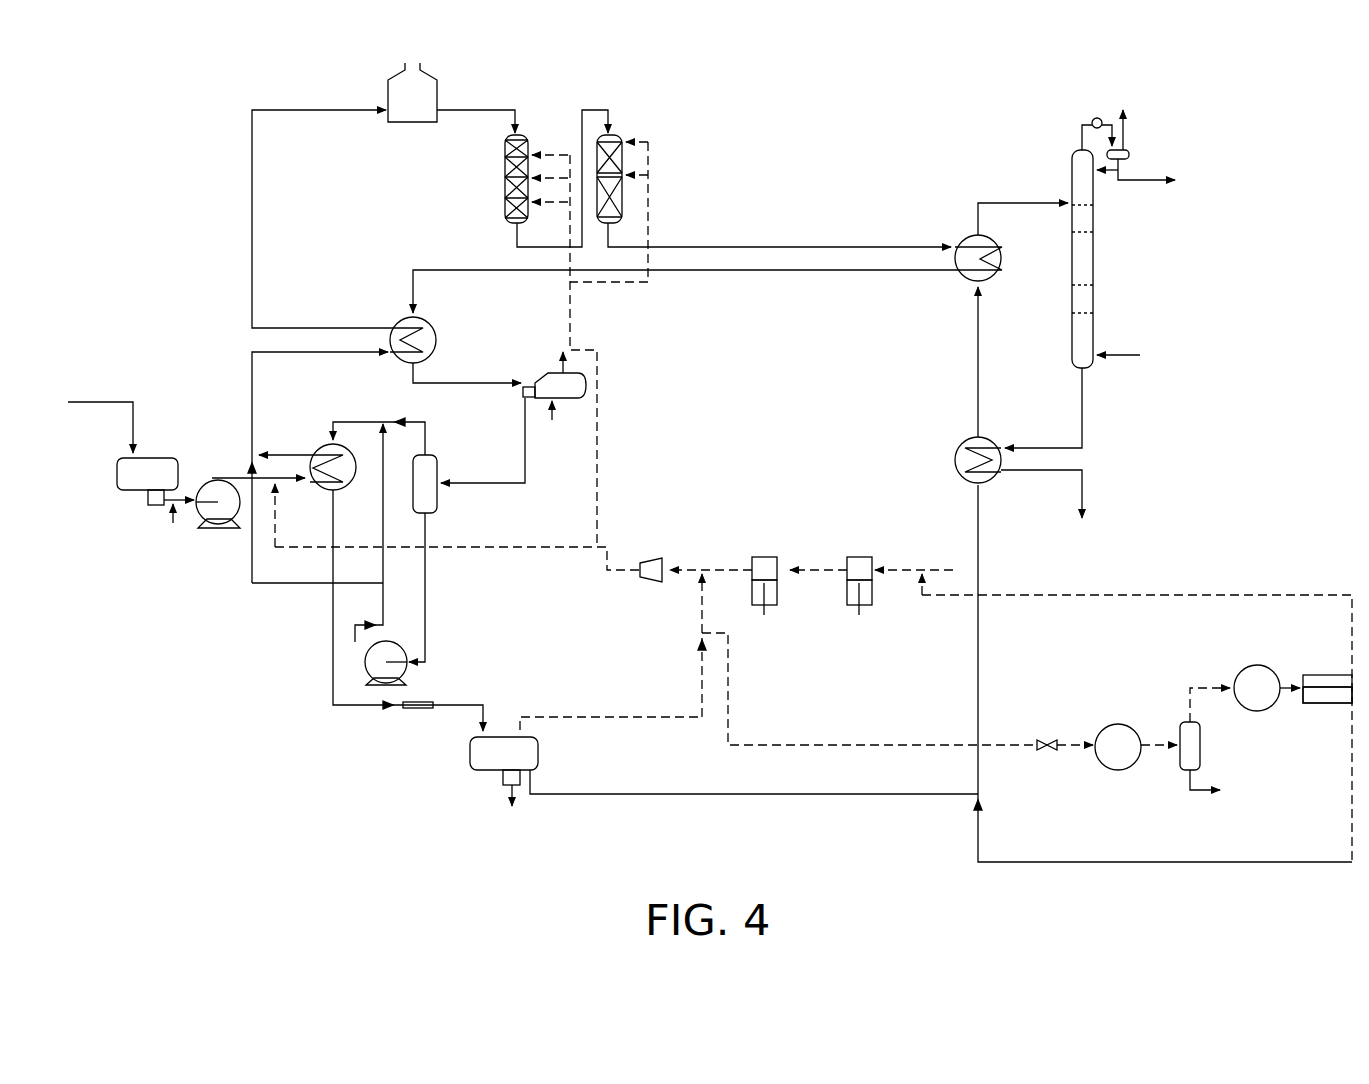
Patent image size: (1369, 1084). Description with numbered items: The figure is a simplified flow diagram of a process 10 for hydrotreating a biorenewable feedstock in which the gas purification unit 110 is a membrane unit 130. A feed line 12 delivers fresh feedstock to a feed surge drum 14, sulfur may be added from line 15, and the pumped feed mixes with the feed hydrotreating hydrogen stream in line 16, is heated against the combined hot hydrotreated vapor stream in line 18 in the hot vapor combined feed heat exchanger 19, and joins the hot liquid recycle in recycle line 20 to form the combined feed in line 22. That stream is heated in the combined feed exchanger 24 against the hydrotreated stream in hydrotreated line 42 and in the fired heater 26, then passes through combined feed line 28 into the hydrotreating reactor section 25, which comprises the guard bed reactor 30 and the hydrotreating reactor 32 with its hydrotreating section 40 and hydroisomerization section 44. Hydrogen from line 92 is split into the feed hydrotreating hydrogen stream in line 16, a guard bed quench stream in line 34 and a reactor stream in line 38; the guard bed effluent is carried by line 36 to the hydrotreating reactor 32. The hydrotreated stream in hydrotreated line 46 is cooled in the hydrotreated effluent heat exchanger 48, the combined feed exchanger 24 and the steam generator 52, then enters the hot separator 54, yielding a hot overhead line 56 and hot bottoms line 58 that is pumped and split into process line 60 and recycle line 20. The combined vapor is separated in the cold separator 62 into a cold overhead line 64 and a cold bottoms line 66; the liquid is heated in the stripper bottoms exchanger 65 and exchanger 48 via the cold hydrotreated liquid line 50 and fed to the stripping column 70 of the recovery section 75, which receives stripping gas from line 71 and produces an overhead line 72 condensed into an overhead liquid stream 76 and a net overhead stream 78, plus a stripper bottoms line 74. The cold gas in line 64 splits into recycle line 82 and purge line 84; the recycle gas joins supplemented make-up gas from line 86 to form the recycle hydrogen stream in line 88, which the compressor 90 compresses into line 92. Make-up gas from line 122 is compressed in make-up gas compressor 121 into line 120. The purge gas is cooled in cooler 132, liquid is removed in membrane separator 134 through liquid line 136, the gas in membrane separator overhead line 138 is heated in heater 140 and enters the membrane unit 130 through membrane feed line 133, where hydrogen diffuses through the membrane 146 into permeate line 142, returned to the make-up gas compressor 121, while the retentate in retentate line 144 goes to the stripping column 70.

The process 10 is at (117, 240).
The feed line 12 is at (95, 404).
The feed surge drum 14 is at (165, 457).
The line 15 is at (173, 521).
The feed hydrotreating hydrogen stream line 16 is at (470, 546).
The combined hot hydrotreated vapor stream line 18 is at (372, 420).
The hot vapor combined feed heat exchanger 19 is at (322, 488).
The recycle line 20 is at (275, 584).
The combined biorenewable feed stream line 22 is at (252, 400).
The combined feed exchanger 24 is at (428, 326).
The hydrotreating reactor section 25 is at (686, 132).
The fired heater 26 is at (388, 110).
The combined feed line 28 is at (508, 108).
The guard bed reactor 30 is at (505, 180).
The hydrotreating reactor 32 is at (612, 131).
The guard bed hydrotreating hydrogen stream line 34 is at (568, 290).
The interstage line 36 is at (540, 248).
The reactor hydrotreating hydrogen stream line 38 is at (650, 230).
The hydrotreating section 40 is at (623, 160).
The hydrotreated line 42 is at (438, 269).
The hydroisomerization section 44 is at (623, 196).
The hydrotreated line 46 is at (795, 246).
The hydrotreated effluent heat exchanger 48 is at (1003, 243).
The cold hydrotreated liquid line 50 is at (978, 315).
The steam generator 52 is at (578, 399).
The hot separator 54 is at (437, 458).
The hot overhead line 56 is at (425, 422).
The hot bottoms line 58 is at (426, 613).
The process line 60 is at (383, 558).
The cold separator 62 is at (470, 755).
The cold overhead line 64 is at (596, 717).
The stripper bottoms exchanger 65 is at (960, 443).
The cold bottoms line 66 is at (633, 794).
The stripping column 70 is at (1093, 244).
The stripping gas line 71 is at (1119, 354).
The overhead line 72 is at (1082, 128).
The stripper bottoms line 74 is at (1082, 392).
The recovery section 75 is at (995, 163).
The overhead liquid stream 76 is at (1148, 181).
The net overhead stream 78 is at (1127, 137).
The recycle line 82 is at (701, 597).
The purge line 84 is at (729, 711).
The supplemented make-up hydrogen gas stream line 86 is at (718, 568).
The recycle hydrogen stream line 88 is at (690, 568).
The compressor 90 is at (650, 582).
The hydrotreating hydrogen stream line 92 is at (607, 563).
The gas purification unit 110 is at (1110, 637).
The make-up gas line 120 is at (745, 568).
The make-up gas compressor 121 is at (847, 586).
The make-up gas line 122 is at (943, 567).
The membrane unit 130 is at (1312, 674).
The cooler 132 is at (1117, 723).
The membrane feed line 133 is at (1287, 687).
The membrane separator 134 is at (1200, 727).
The liquid line 136 is at (1194, 791).
The membrane separator overhead line 138 is at (1200, 686).
The heater 140 is at (1255, 664).
The permeate line 142 is at (1272, 594).
The retentate line 144 is at (1285, 862).
The membrane 146 is at (1333, 698).